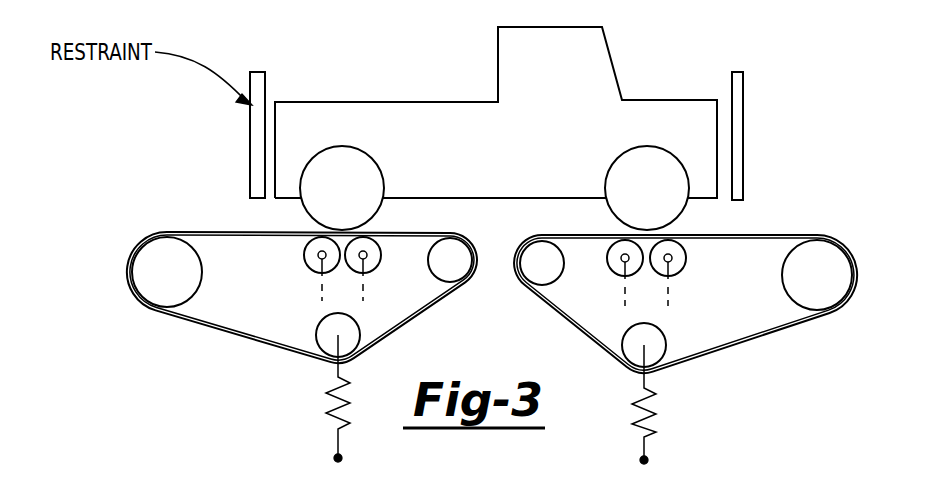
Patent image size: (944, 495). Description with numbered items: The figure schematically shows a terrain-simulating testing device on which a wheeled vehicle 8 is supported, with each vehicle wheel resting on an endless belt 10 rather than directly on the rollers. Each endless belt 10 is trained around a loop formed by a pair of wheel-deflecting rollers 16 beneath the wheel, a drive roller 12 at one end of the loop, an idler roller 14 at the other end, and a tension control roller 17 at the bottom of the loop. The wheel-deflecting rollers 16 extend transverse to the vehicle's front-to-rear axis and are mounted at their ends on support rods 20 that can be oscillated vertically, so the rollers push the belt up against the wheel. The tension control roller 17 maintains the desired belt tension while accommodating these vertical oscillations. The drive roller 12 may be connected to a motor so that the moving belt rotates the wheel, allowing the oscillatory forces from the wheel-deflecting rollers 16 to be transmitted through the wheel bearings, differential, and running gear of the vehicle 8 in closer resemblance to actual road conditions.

The wheeled vehicle 8 is at (611, 49).
The endless belt 10 is at (226, 232).
The drive roller 12 is at (148, 290).
The idler roller 14 is at (454, 287).
The wheel-deflecting roller 16 is at (308, 262).
The tension control roller 17 is at (320, 343).
The support rod 20 is at (318, 297).